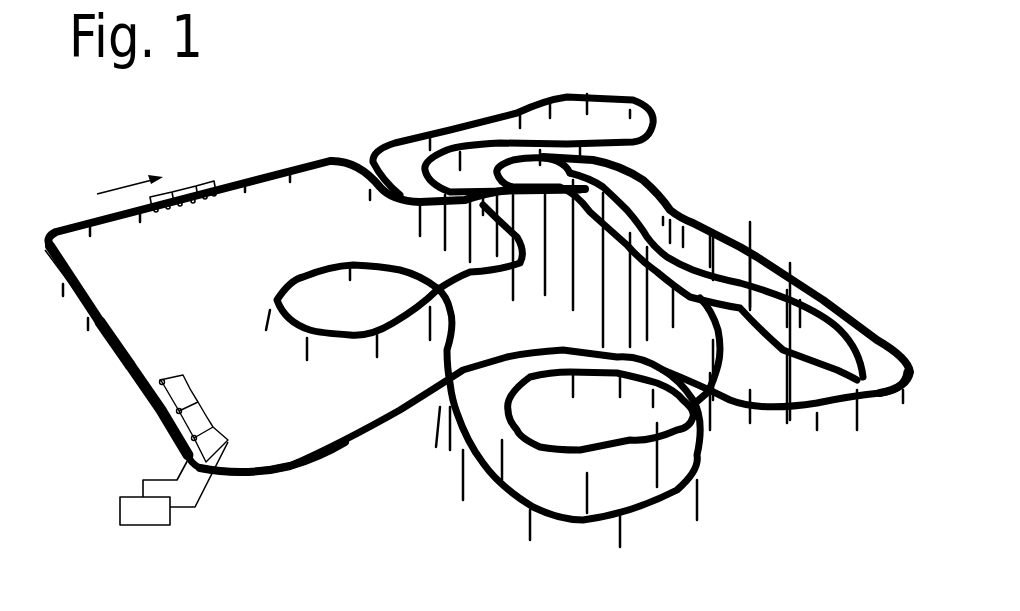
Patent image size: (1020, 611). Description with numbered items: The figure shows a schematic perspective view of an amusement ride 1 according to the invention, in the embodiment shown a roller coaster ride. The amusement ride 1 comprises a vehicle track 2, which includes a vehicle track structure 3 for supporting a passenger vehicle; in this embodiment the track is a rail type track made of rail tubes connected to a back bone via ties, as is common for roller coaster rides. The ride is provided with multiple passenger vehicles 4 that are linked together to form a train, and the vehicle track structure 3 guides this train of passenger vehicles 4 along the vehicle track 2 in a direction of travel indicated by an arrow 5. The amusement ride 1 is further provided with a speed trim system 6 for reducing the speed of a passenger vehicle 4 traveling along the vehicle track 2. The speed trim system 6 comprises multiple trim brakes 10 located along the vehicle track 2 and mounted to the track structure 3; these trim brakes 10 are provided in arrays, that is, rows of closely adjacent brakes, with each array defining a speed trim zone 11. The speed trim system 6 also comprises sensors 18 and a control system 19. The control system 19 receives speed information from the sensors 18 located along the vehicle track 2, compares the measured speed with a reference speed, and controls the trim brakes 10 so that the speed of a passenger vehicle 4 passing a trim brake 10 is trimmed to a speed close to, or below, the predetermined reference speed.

The amusement ride 1 is at (735, 168).
The vehicle track 2 is at (808, 270).
The vehicle track structure 3 is at (302, 470).
The passenger vehicles 4 is at (192, 188).
The arrow 5 is at (124, 188).
The speed trim system 6 is at (118, 488).
The trim brakes 10 is at (163, 448).
The speed trim zone 11 is at (118, 385).
The sensors 18 is at (163, 362).
The control system 19 is at (130, 515).